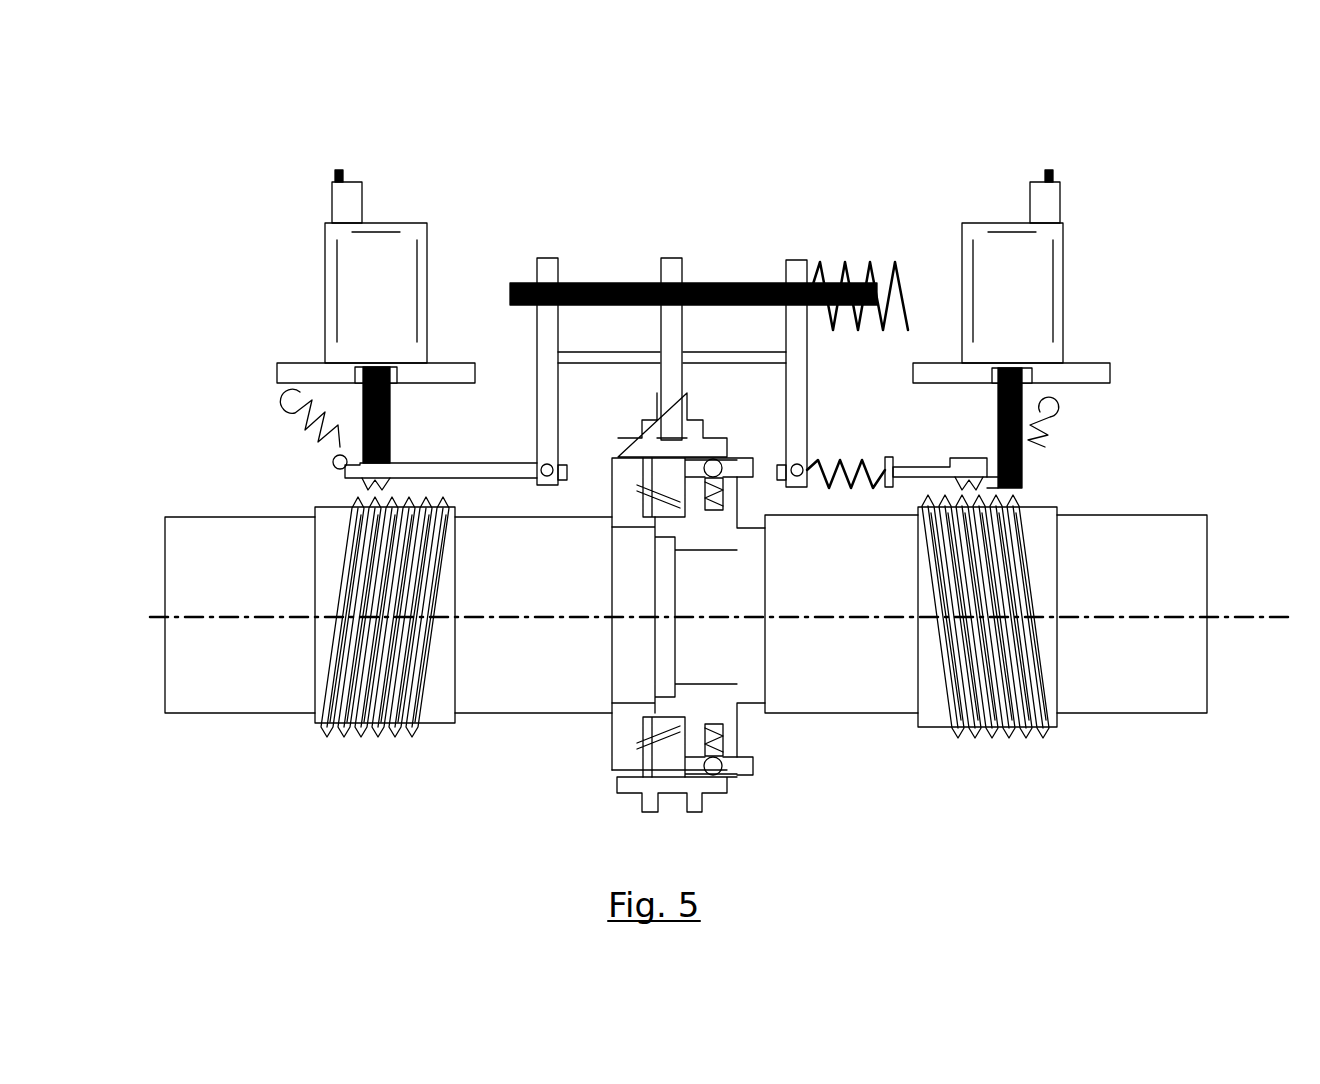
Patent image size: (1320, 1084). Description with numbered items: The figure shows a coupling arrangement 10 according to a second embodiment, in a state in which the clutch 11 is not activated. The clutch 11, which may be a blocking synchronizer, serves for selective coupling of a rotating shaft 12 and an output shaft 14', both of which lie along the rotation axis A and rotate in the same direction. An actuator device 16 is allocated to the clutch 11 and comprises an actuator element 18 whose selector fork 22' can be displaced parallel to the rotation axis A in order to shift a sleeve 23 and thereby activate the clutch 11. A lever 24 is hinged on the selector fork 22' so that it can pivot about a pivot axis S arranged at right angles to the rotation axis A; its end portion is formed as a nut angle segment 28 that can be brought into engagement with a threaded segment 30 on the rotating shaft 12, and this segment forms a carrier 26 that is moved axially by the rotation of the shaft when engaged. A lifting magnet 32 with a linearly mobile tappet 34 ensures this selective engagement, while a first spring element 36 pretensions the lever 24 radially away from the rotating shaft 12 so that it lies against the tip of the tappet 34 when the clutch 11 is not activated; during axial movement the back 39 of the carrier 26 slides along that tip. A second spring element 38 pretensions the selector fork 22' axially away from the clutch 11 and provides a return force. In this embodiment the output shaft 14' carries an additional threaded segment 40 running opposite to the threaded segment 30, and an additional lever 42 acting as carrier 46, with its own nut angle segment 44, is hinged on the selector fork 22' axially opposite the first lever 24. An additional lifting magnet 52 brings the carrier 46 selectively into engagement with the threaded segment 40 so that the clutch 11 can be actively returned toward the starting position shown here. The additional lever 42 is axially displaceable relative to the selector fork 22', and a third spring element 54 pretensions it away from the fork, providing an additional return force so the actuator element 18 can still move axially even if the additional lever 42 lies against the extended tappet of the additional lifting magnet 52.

The coupling arrangement 10 is at (204, 144).
The clutch 11 is at (733, 804).
The rotating shaft 12 is at (233, 670).
The output shaft 14' is at (986, 661).
The actuator device 16 is at (516, 194).
The actuator element 18 is at (707, 263).
The selector fork 22' is at (693, 198).
The sleeve 23 is at (690, 440).
The lever 24 is at (467, 457).
The carrier 26 is at (345, 460).
The nut angle segment 28 is at (355, 473).
The threaded segment 30 is at (377, 733).
The lifting magnet 32 is at (392, 297).
The tappet 34 is at (388, 388).
The first spring element 36 is at (277, 413).
The second spring element 38 is at (853, 262).
The back of the carrier 39 is at (396, 440).
The additional threaded segment 40 is at (993, 737).
The additional lever 42 is at (905, 467).
The nut angle segment 44 is at (1010, 488).
The carrier 46 is at (958, 468).
The additional lifting magnet 52 is at (1037, 297).
The third spring element 54 is at (848, 458).
The pivot axis S is at (547, 463).
The rotation axis A is at (1230, 617).